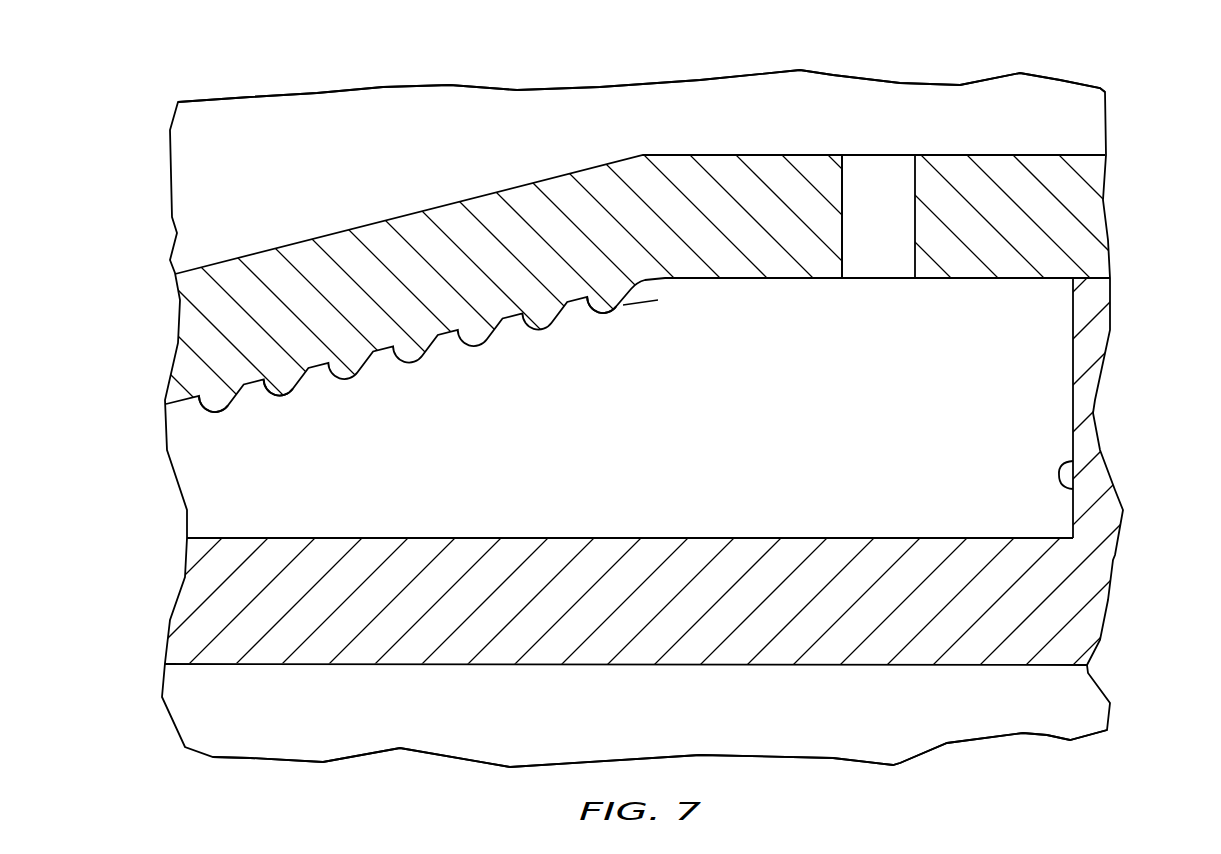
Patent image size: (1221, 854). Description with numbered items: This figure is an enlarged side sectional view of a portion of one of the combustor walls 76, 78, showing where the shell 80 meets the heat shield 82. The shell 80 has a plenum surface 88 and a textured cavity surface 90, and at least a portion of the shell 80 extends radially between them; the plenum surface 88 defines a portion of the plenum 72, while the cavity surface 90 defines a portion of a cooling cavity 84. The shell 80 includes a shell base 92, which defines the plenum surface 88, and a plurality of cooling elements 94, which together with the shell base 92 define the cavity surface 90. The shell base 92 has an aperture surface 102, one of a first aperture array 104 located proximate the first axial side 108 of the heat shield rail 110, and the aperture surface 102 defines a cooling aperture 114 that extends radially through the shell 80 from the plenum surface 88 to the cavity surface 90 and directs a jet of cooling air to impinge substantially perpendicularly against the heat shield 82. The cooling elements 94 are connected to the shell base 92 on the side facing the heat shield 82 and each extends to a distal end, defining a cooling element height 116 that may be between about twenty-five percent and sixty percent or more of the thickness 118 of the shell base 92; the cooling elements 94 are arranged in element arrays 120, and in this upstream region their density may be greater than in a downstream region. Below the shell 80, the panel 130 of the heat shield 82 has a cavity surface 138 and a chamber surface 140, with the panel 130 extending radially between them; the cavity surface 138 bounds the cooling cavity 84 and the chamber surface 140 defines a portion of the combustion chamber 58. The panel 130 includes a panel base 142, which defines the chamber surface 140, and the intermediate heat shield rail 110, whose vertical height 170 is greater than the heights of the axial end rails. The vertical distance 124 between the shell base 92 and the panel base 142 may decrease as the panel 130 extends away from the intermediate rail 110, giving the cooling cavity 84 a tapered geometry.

The combustion chamber 58 is at (643, 729).
The plenum 72 is at (668, 124).
The wall 76 is at (683, 413).
The wall 78 is at (1123, 130).
The shell 80 is at (1010, 155).
The heat shield 82 is at (627, 503).
The cooling cavity 84 is at (675, 445).
The plenum surface 88 is at (336, 232).
The cavity surface 90 is at (363, 380).
The shell base 92 is at (1080, 220).
The cooling element 94 is at (284, 397).
The aperture surface 102 is at (842, 256).
The aperture array 104 is at (880, 130).
The first axial side 108 is at (1073, 483).
The heat shield rail 110 is at (1078, 410).
The cooling aperture 114 is at (888, 247).
The cooling element height 116 is at (639, 274).
The thickness 118 is at (548, 183).
The element array 120 is at (226, 418).
The vertical distance 124 is at (447, 345).
The panel 130 is at (940, 682).
The cavity surface 138 is at (762, 538).
The chamber surface 140 is at (740, 665).
The panel base 142 is at (1043, 643).
The vertical height 170 is at (1028, 284).